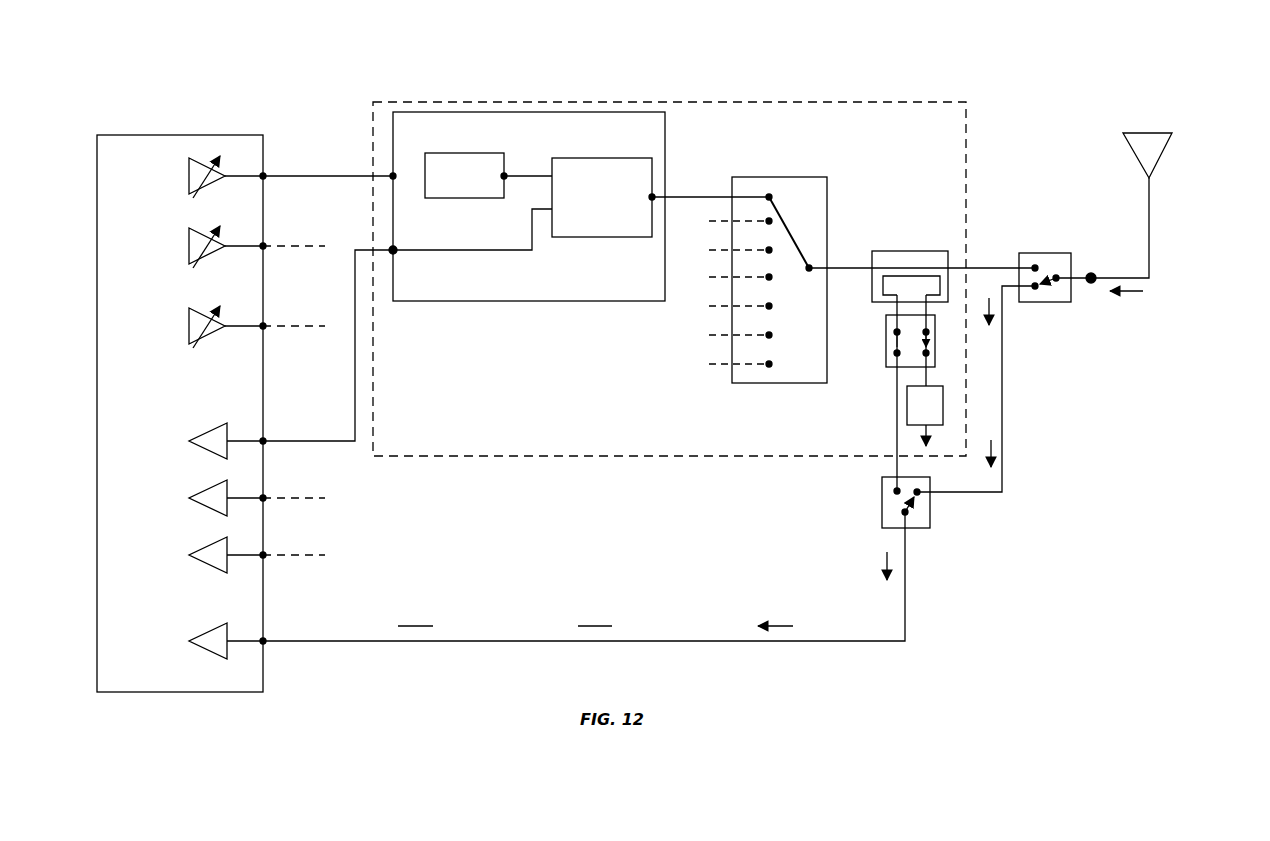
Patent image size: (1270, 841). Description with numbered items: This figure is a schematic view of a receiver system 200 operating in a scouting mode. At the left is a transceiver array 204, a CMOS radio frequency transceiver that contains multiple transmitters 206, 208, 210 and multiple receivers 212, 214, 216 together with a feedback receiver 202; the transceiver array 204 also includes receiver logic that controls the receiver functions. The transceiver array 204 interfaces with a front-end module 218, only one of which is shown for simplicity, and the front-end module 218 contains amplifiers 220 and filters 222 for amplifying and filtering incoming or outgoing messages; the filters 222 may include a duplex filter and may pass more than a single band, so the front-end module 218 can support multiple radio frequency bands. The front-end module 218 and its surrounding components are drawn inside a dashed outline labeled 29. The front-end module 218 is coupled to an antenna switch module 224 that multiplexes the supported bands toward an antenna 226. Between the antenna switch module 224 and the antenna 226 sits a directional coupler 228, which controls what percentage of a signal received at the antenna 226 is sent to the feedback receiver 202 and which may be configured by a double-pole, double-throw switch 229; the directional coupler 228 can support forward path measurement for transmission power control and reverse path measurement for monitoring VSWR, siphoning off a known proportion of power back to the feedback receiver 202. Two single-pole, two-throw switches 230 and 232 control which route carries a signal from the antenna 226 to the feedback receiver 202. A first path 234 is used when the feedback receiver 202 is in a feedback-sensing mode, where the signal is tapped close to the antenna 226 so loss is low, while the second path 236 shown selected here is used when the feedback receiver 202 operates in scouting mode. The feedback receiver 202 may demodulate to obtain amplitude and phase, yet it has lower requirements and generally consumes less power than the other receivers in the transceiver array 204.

The receiver system 200 is at (898, 68).
The transceiver array 204 is at (193, 124).
The transmitter 206 is at (187, 191).
The transmitter 208 is at (187, 261).
The transmitter 210 is at (187, 341).
The receiver 212 is at (210, 426).
The receiver 214 is at (210, 483).
The receiver 216 is at (210, 540).
The feedback receiver 202 is at (210, 626).
The front end module 29 is at (665, 102).
The front-end module 218 is at (530, 112).
The amplifiers 220 is at (462, 153).
The filters 222 is at (602, 158).
The antenna switch module 224 is at (780, 177).
The directional coupler 228 is at (910, 251).
The double-pole, double-throw switch 229 is at (884, 342).
The switch 230 is at (1045, 253).
The antenna 226 is at (1166, 144).
The switch 232 is at (880, 507).
The first path 234 is at (604, 624).
The second path 236 is at (1004, 455).